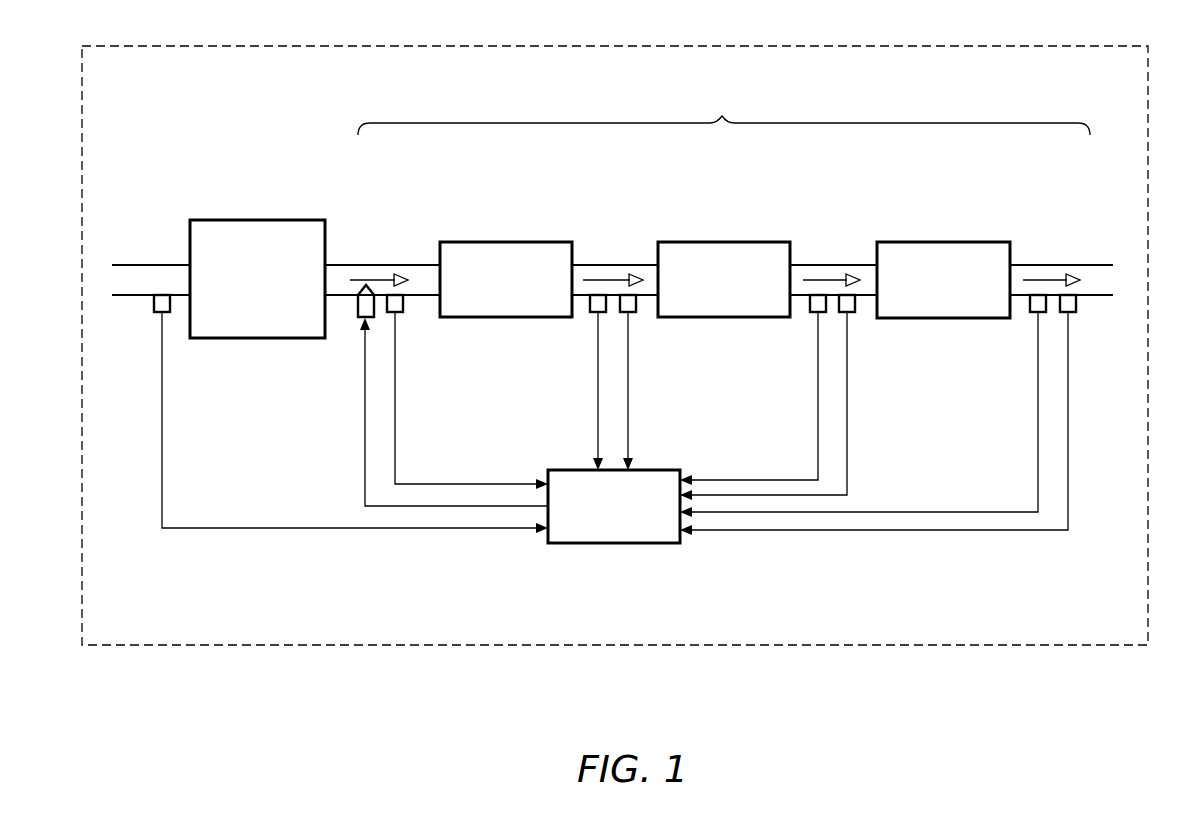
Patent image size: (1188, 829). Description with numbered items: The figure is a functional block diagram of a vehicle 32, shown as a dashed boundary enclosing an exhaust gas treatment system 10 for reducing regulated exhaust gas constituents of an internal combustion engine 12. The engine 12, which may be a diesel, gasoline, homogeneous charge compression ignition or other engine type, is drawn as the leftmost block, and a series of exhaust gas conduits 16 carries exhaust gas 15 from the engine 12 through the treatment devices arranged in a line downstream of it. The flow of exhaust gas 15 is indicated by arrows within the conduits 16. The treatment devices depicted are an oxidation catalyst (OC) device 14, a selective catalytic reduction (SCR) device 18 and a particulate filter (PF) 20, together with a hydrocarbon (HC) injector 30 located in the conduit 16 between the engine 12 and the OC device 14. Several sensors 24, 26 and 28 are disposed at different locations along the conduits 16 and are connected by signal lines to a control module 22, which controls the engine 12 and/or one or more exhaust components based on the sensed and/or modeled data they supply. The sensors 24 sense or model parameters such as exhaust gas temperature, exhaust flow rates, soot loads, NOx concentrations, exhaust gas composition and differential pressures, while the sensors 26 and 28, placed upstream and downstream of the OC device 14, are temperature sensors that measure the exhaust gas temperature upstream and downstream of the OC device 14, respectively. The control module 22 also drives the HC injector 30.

The exhaust gas treatment system 10 is at (722, 116).
The internal combustion engine 12 is at (309, 219).
The oxidation catalyst (OC) device 14 is at (548, 241).
The exhaust gas 15 is at (382, 277).
The exhaust gas conduits 16 is at (343, 263).
The selective catalytic reduction (SCR) device 18 is at (768, 241).
The particulate filter (PF) 20 is at (988, 241).
The control module 22 is at (652, 545).
The sensors 24 is at (158, 313).
The sensor 26 is at (400, 313).
The sensor 28 is at (595, 313).
The hydrocarbon (HC) injector 30 is at (358, 314).
The vehicle 32 is at (1035, 647).